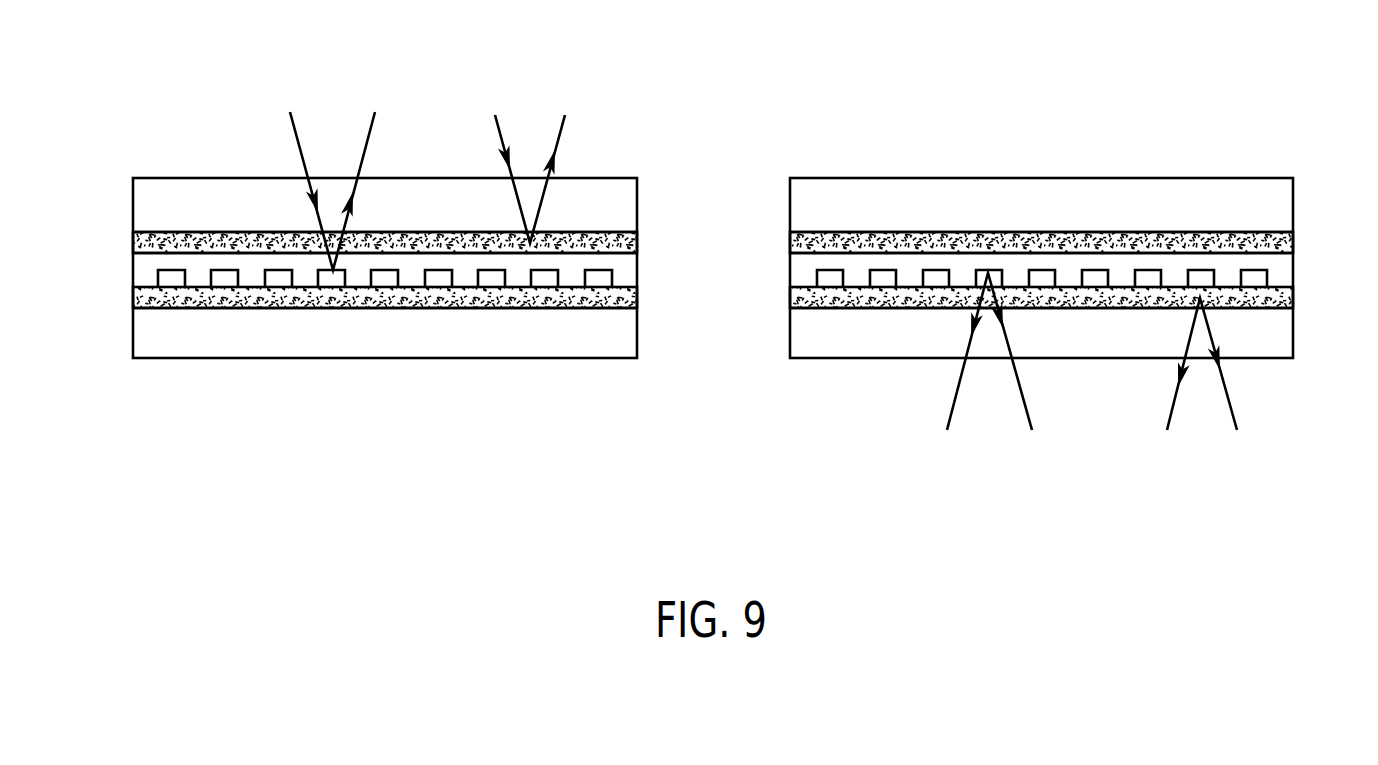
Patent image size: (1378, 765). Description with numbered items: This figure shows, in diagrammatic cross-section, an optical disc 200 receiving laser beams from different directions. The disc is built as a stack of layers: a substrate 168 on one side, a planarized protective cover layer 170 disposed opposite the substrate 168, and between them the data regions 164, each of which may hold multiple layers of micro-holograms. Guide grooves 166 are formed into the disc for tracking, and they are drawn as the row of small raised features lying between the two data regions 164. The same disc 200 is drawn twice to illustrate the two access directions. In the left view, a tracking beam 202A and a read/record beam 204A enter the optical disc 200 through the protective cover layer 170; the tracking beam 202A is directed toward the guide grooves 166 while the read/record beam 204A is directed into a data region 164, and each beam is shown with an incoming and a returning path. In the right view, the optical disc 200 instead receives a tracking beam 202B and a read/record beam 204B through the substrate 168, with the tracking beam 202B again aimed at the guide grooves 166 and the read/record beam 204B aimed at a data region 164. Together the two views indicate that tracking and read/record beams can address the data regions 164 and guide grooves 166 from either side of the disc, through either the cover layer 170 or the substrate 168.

The optical disc 200 is at (155, 145).
The tracking beam 202A is at (296, 137).
The tracking beam 202B is at (1025, 405).
The read/record beam 204A is at (500, 135).
The read/record beam 204B is at (1233, 415).
The data region 164 is at (133, 298).
The guide grooves 166 is at (637, 268).
The substrate 168 is at (163, 358).
The cover layer 170 is at (589, 178).